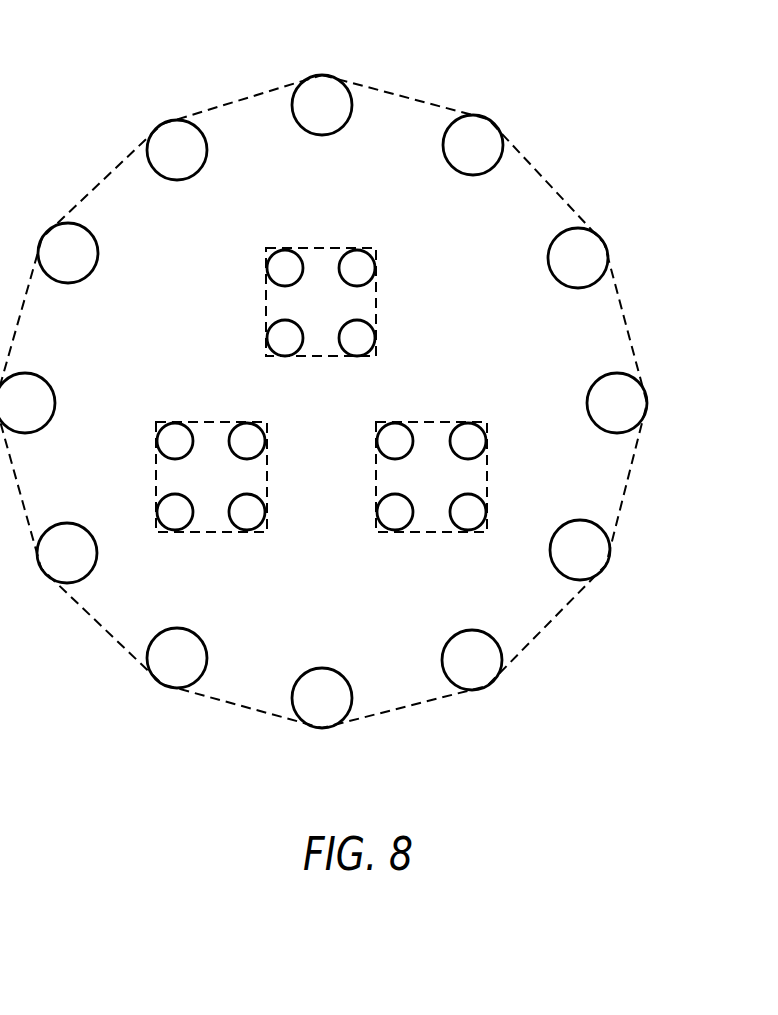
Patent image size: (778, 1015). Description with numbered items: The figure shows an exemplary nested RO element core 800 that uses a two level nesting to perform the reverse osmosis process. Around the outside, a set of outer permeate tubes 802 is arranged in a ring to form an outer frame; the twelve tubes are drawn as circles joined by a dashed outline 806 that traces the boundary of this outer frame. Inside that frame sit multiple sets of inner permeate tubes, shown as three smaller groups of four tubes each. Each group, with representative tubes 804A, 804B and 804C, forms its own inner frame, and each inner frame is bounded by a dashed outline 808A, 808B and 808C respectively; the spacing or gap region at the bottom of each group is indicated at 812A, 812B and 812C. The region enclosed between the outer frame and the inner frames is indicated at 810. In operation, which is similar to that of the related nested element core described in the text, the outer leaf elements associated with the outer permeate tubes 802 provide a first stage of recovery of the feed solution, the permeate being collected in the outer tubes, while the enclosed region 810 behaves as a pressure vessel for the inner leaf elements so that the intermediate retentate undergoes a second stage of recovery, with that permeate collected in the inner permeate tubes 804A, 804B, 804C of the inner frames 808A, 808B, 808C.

The nested RO element core 800 is at (170, 63).
The outer permeate tube 802 is at (474, 115).
The inner permeate tube 804A is at (276, 252).
The inner permeate tube 804B is at (383, 425).
The inner permeate tube 804C is at (163, 425).
The outer ring boundary 806 is at (633, 337).
The first magnet cluster boundary 808A is at (377, 308).
The second magnet cluster boundary 808B is at (487, 481).
The third magnet cluster boundary 808C is at (267, 481).
The base plate region 810 is at (595, 482).
The first cluster spacing 812A is at (312, 342).
The second cluster spacing 812B is at (422, 512).
The third cluster spacing 812C is at (202, 512).